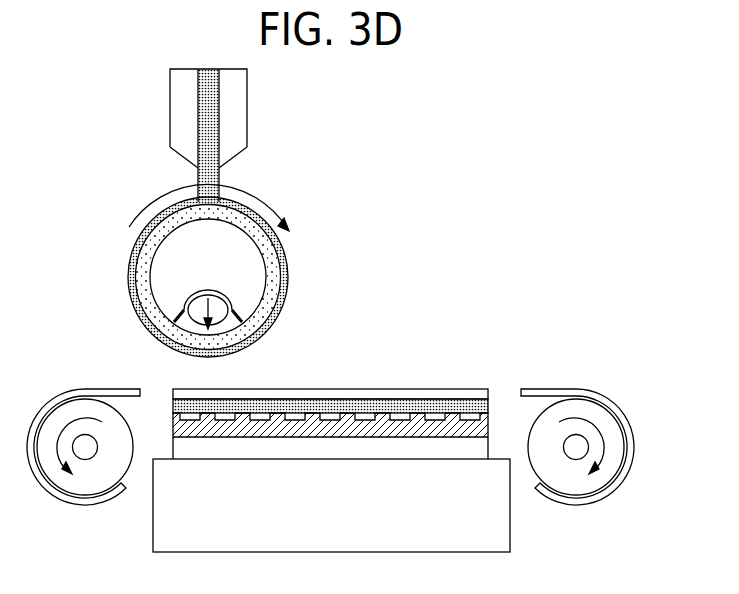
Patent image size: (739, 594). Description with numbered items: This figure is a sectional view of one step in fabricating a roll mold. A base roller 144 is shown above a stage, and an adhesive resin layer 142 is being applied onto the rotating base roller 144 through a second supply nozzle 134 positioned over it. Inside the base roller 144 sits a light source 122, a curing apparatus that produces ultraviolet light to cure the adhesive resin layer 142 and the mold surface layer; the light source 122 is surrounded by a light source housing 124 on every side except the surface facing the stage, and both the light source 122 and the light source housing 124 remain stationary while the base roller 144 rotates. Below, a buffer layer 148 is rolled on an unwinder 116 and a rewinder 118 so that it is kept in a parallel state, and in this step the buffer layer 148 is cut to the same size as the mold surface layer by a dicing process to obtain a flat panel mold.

The second supply nozzle 134 is at (237, 117).
The adhesive resin layer 142 is at (283, 243).
The base roller 144 is at (280, 275).
The light source 122 is at (217, 300).
The light source housing 124 is at (205, 290).
The buffer layer 148 is at (445, 392).
The unwinder 116 is at (97, 485).
The rewinder 118 is at (572, 485).